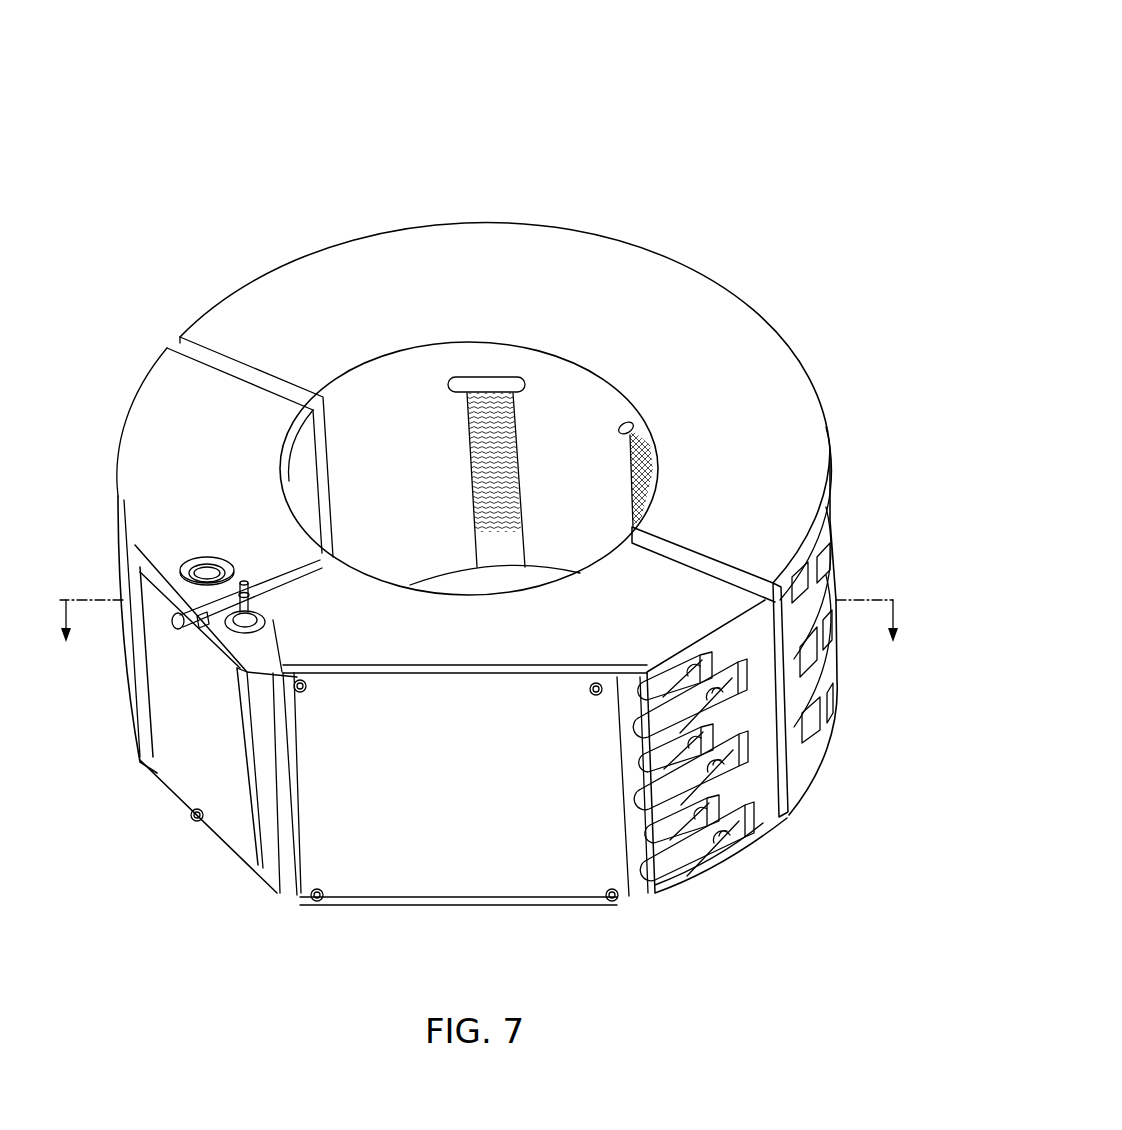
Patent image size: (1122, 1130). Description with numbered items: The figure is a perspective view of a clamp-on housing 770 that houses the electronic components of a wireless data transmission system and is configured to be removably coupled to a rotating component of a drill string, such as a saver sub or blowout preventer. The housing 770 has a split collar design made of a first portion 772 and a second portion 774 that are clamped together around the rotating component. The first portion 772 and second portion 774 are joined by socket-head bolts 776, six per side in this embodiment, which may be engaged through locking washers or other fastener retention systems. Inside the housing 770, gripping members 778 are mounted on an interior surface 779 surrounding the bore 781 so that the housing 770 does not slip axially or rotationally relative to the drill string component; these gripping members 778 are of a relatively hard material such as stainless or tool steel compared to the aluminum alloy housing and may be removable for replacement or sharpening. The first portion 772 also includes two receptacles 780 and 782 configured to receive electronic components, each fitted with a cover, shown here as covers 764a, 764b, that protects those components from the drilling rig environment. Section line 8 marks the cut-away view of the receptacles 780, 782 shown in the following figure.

The clamp-on housing 770 is at (736, 39).
The first portion 772 is at (135, 472).
The second portion 774 is at (782, 430).
The socket-head bolts 776 is at (727, 680).
The gripping members 778 is at (484, 378).
The interior surface 779 is at (585, 423).
The receptacle 780 is at (572, 916).
The bore 781 is at (380, 413).
The receptacle 782 is at (163, 840).
The cover 764a is at (390, 873).
The cover 764b is at (180, 773).
The section line for FIG. 8 is at (479, 637).